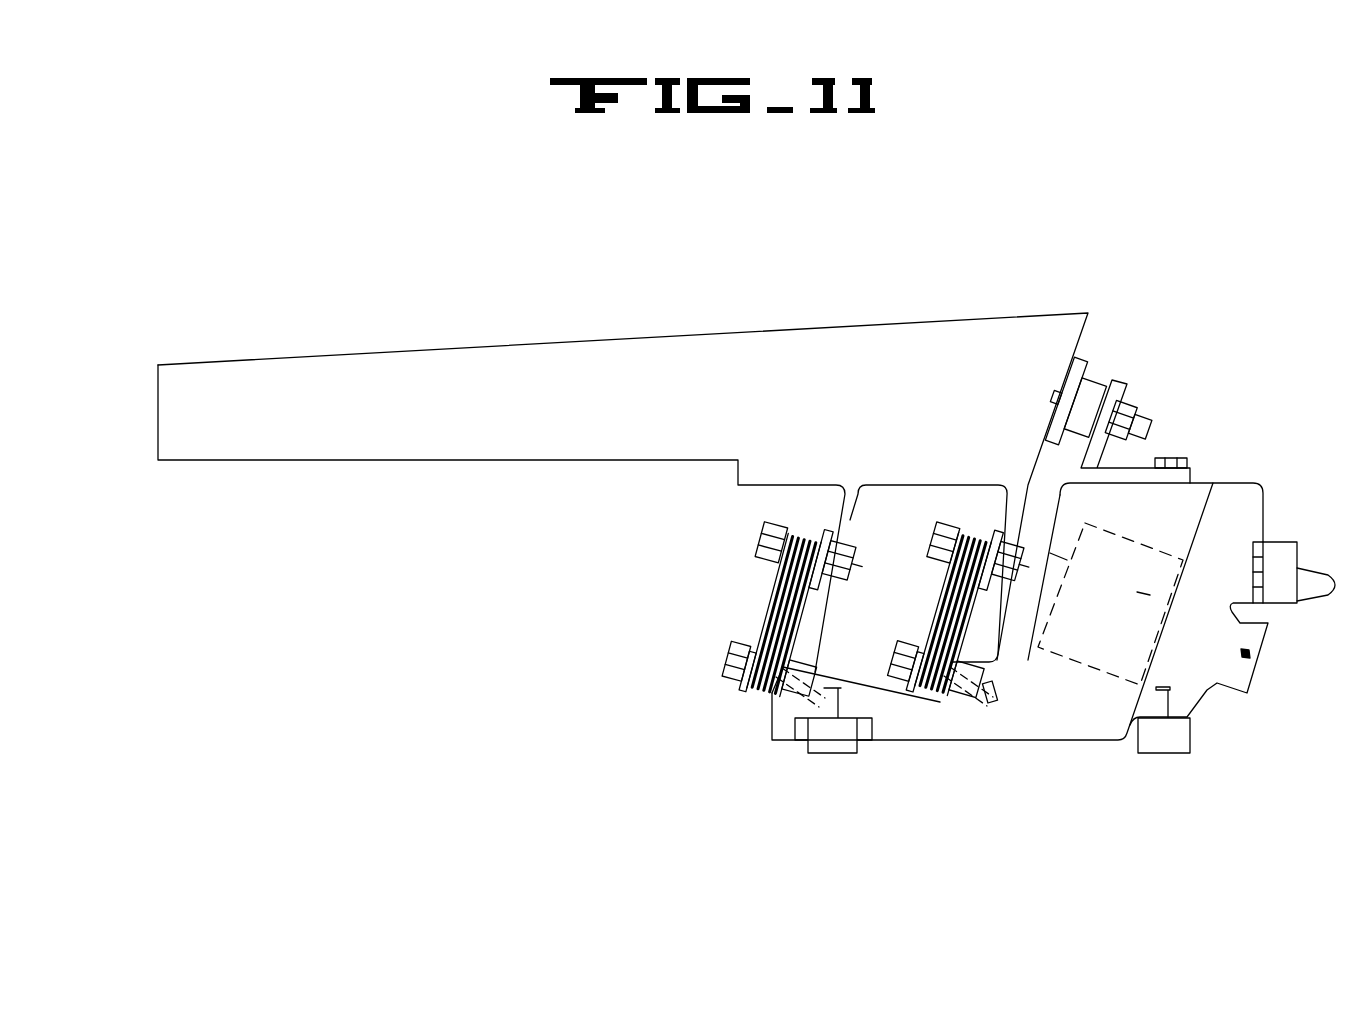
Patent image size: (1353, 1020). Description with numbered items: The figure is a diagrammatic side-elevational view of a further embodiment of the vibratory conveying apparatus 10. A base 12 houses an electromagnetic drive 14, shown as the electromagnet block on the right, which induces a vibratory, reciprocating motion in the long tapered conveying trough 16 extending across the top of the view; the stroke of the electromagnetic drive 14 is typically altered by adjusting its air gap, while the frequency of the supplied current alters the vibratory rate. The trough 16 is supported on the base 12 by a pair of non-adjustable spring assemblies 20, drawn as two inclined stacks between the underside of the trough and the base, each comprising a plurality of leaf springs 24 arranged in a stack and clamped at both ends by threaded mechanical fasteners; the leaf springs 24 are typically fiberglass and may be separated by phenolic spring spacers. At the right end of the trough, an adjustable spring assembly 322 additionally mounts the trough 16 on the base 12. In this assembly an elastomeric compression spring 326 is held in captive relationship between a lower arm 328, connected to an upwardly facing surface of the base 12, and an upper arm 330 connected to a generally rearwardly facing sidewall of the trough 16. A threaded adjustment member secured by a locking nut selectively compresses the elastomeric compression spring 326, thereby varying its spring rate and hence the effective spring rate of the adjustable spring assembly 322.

The vibratory conveying apparatus 10 is at (1206, 290).
The base 12 is at (1190, 495).
The electromagnetic drive 14 is at (1083, 667).
The conveying trough 16 is at (786, 327).
The non-adjustable spring assembly 20 is at (760, 622).
The leaf springs 24 is at (813, 537).
The adjustable spring assembly 322 is at (1169, 379).
The elastomeric compression spring 326 is at (1110, 381).
The lower arm 328 is at (1103, 452).
The upper arm 330 is at (1085, 358).